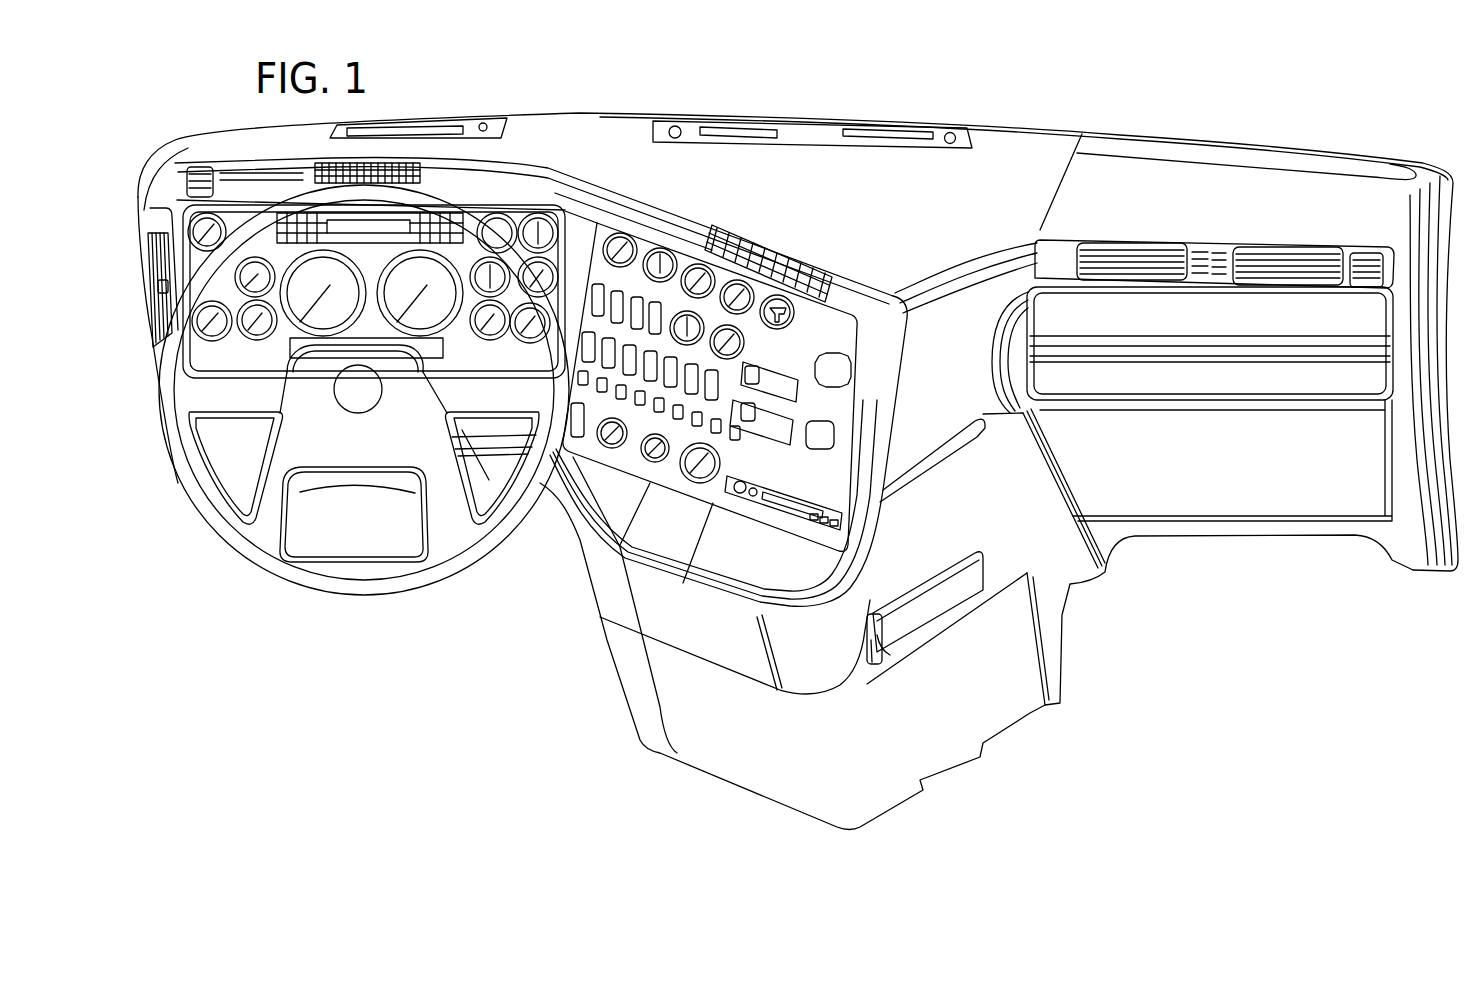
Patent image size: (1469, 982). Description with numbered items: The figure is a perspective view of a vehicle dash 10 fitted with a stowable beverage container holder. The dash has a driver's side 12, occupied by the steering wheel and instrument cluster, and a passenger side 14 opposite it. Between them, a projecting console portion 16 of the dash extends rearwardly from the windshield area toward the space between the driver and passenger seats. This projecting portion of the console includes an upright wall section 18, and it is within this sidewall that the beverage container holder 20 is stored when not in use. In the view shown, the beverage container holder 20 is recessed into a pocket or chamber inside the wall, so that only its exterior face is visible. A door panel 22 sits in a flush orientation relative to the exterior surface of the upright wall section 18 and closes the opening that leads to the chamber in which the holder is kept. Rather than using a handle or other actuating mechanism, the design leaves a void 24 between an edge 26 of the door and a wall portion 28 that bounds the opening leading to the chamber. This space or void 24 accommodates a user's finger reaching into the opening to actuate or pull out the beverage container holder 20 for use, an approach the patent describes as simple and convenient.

The vehicle dash 10 is at (1007, 168).
The driver's side 12 is at (377, 651).
The passenger side 14 is at (1289, 610).
The projecting console portion 16 is at (890, 677).
The upright wall section 18 is at (940, 526).
The beverage container holder 20 is at (960, 583).
The door panel 22 is at (977, 567).
The void 24 is at (872, 634).
The edge 26 is at (877, 643).
The wall portion 28 is at (871, 653).